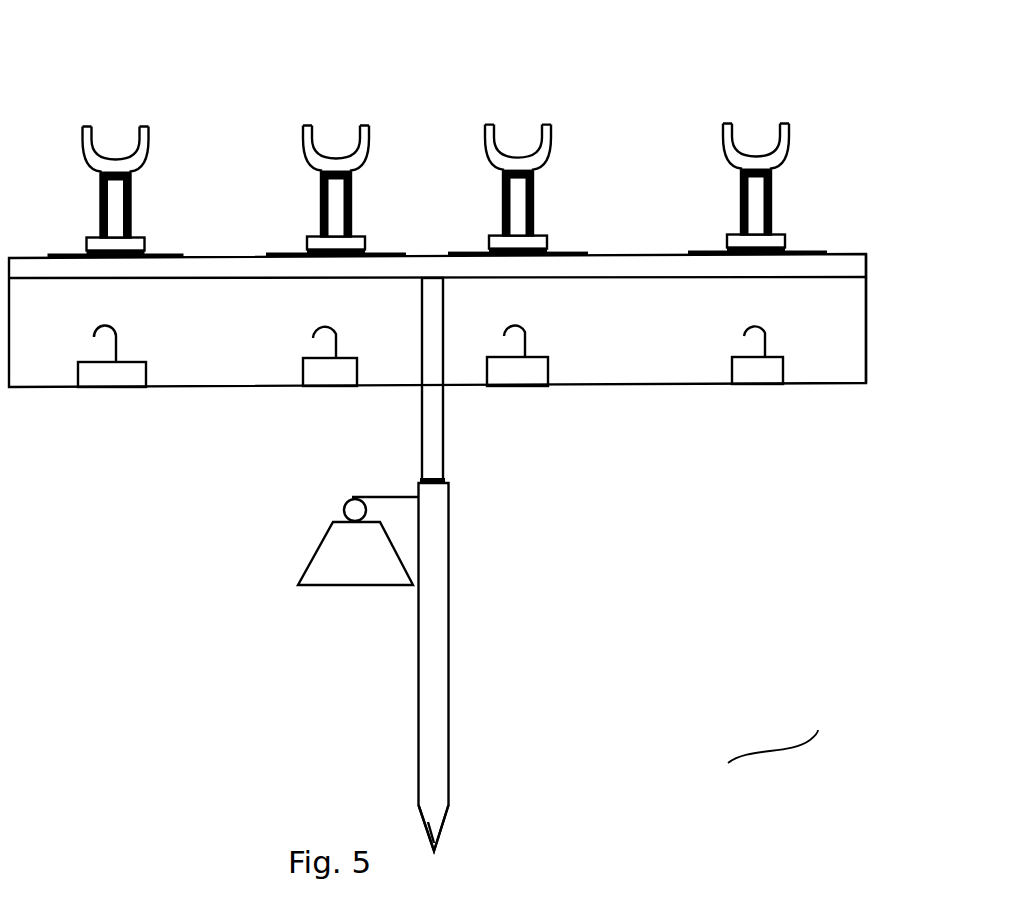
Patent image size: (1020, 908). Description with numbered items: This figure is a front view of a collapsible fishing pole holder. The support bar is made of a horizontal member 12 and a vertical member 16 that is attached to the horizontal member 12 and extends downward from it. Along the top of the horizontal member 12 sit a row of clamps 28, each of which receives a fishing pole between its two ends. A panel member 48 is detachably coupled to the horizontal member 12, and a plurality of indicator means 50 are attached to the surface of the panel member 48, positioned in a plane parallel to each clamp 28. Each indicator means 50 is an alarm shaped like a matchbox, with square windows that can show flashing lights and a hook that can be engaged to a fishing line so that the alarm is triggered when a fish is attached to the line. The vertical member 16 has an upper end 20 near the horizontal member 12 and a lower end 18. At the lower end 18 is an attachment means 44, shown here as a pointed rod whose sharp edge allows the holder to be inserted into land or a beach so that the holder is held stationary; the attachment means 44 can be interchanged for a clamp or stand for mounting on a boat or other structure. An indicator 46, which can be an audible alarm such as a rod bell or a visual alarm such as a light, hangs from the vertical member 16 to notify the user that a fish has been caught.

The horizontal member 12 is at (228, 282).
The vertical member 16 is at (460, 518).
The lower end 18 is at (457, 713).
The upper end 20 is at (454, 375).
The clamp 28 is at (150, 132).
The attachment means 44 is at (452, 825).
The indicator 46 is at (297, 540).
The panel member 48 is at (872, 335).
The indicator means 50 is at (726, 372).